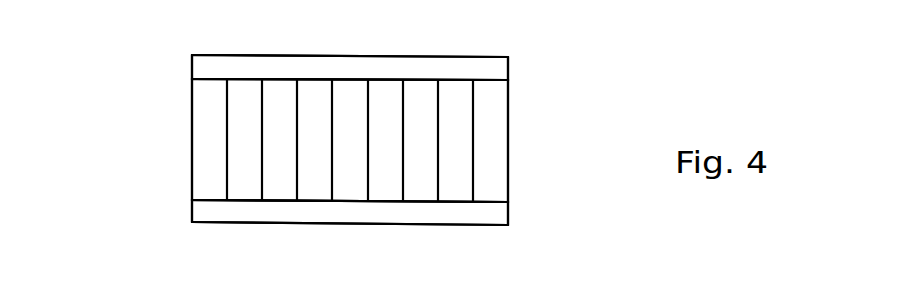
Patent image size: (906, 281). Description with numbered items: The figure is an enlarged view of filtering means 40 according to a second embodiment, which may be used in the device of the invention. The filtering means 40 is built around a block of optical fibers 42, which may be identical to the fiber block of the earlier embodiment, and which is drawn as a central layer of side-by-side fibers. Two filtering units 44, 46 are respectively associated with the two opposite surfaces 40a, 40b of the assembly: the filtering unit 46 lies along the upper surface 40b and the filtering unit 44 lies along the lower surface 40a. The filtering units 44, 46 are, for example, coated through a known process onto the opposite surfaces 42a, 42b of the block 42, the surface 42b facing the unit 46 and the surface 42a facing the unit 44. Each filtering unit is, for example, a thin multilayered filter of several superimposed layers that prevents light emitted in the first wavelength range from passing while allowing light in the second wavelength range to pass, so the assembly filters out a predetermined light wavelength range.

The filtering means 40 is at (106, 89).
The opposite surface 40a is at (495, 225).
The opposite surface 40b is at (488, 57).
The block of optical fibers 42 is at (508, 138).
The opposite surface of the block 42a is at (201, 200).
The opposite surface of the block 42b is at (201, 79).
The filtering unit 44 is at (498, 212).
The filtering unit 46 is at (498, 71).